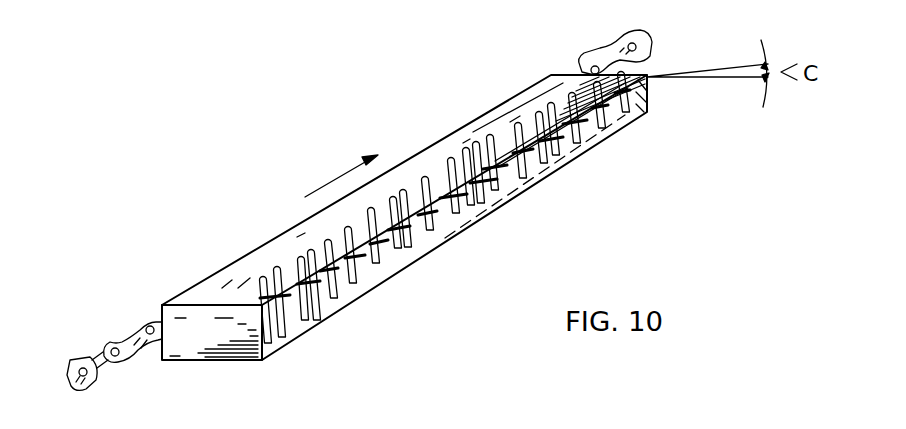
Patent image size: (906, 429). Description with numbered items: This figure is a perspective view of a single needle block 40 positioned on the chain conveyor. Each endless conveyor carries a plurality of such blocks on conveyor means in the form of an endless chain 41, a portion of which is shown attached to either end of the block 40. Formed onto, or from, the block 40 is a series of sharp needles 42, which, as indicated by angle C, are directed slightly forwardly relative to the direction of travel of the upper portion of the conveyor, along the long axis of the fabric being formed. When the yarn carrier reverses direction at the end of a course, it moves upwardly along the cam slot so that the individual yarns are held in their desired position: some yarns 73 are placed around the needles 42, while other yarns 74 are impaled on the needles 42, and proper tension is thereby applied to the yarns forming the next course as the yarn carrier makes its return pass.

The block 40 is at (198, 345).
The endless chain 41 is at (125, 328).
The sharp needles 42 is at (288, 300).
The yarns 73 is at (262, 277).
The yarns 74 is at (300, 257).